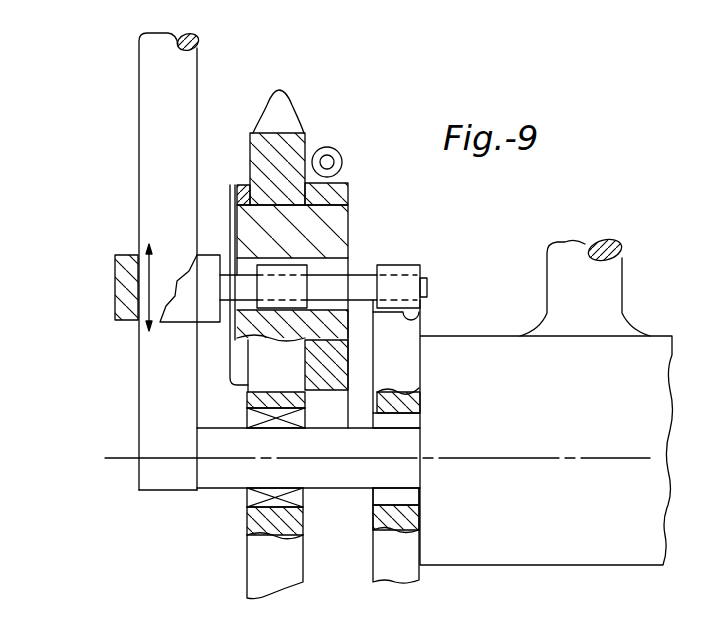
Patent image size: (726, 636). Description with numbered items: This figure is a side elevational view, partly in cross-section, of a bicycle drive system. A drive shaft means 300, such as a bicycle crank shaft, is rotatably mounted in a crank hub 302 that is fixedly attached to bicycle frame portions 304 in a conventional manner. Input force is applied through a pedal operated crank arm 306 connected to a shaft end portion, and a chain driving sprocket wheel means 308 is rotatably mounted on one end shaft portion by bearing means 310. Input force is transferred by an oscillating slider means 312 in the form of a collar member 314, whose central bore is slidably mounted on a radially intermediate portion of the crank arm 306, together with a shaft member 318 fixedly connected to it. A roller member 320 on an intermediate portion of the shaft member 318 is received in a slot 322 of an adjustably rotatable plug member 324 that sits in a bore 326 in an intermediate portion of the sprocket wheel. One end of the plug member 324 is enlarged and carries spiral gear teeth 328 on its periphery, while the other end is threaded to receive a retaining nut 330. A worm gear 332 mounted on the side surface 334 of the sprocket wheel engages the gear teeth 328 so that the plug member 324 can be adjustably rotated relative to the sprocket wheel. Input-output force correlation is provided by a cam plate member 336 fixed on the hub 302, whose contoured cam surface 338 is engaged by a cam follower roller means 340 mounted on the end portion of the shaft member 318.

The drive shaft means 300 is at (410, 452).
The crank hub 302 is at (558, 556).
The bicycle frame portions 304 is at (607, 292).
The pedal operated crank arm 306 is at (154, 90).
The chain driving sprocket wheel means 308 is at (253, 566).
The bearing means 310 is at (247, 495).
The oscillating slider means 312 is at (137, 272).
The collar member 314 is at (120, 297).
The shaft member 318 is at (363, 285).
The roller member 320 is at (287, 306).
The slot 322 is at (332, 262).
The plug member 324 is at (250, 230).
The bore 326 is at (338, 204).
The spiral gear teeth 328 is at (332, 385).
The retaining nut 330 is at (249, 188).
The worm gear 332 is at (341, 160).
The side surface 334 is at (305, 565).
The cam plate member 336 is at (403, 573).
The cam surface 338 is at (420, 321).
The cam follower roller means 340 is at (425, 268).